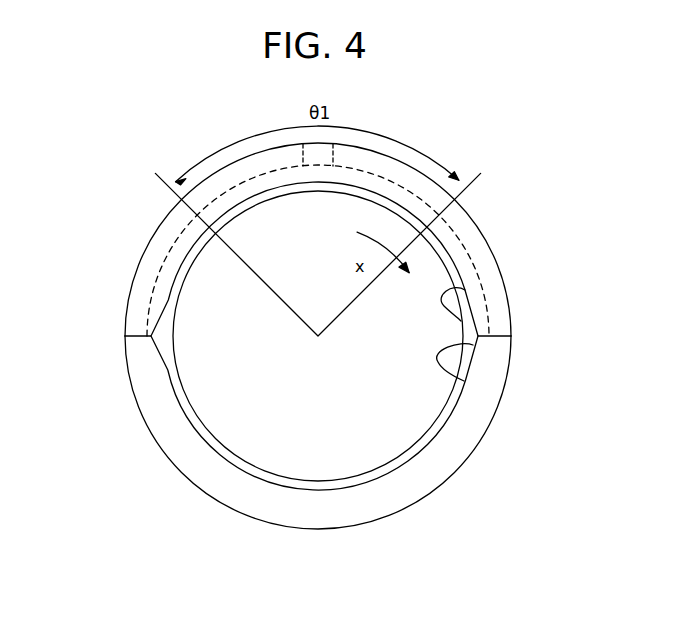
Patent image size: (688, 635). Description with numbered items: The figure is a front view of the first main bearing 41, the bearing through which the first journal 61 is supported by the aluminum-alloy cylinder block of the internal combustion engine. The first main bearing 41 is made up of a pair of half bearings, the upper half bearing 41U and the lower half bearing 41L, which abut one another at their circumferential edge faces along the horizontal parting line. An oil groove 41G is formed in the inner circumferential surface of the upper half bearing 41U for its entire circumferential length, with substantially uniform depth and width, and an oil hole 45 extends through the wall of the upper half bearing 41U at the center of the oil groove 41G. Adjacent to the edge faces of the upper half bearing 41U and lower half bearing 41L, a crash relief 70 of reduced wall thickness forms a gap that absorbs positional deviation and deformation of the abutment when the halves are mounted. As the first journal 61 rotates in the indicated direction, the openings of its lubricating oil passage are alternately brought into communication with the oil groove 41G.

The first main bearing 41 is at (161, 222).
The upper half bearing 41U is at (141, 268).
The lower half bearing 41L is at (142, 386).
The oil groove 41G is at (227, 192).
The oil hole 45 is at (330, 145).
The crash relief 70 is at (445, 302).
The first journal 61 is at (398, 418).